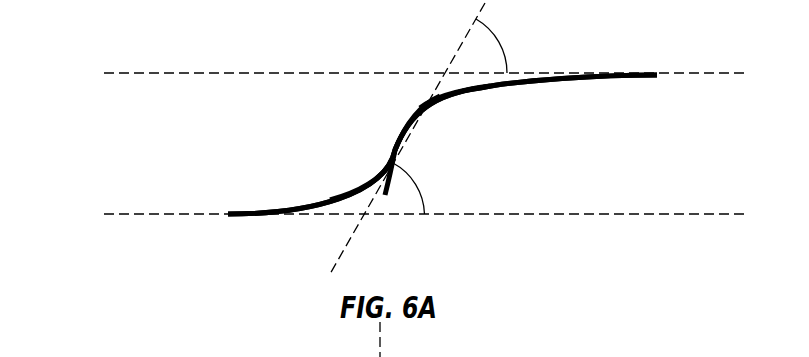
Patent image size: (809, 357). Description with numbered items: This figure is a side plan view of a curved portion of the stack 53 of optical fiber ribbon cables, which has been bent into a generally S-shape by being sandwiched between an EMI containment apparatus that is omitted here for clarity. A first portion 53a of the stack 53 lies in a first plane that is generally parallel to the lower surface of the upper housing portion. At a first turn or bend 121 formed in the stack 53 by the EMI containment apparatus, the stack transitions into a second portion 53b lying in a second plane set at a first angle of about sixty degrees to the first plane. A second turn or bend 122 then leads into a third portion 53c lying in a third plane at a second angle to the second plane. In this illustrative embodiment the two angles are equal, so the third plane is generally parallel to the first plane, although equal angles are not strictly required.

The stack of optical fiber ribbon cables 53 is at (608, 79).
The first portion of the stack 53a is at (233, 211).
The second portion of the stack 53b is at (403, 137).
The third portion of the stack 53c is at (637, 73).
The first turn or bend 121 is at (350, 177).
The second turn or bend 122 is at (463, 112).